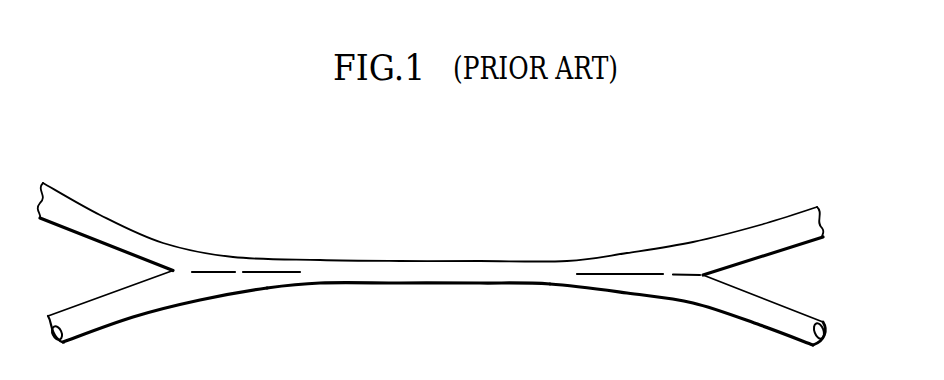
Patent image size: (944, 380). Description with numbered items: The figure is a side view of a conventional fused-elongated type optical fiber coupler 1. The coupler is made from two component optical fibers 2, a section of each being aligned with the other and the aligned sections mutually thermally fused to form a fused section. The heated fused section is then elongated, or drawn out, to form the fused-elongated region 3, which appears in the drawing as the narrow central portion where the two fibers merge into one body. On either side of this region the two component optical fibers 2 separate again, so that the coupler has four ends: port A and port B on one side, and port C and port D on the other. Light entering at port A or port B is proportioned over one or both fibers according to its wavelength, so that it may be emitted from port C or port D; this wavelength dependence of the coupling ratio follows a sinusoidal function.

The optical fiber coupler 1 is at (575, 217).
The component optical fibers 2 is at (712, 240).
The fused-elongated region 3 is at (503, 285).
The port A is at (26, 200).
The port B is at (40, 332).
The port C is at (833, 219).
The port D is at (831, 337).